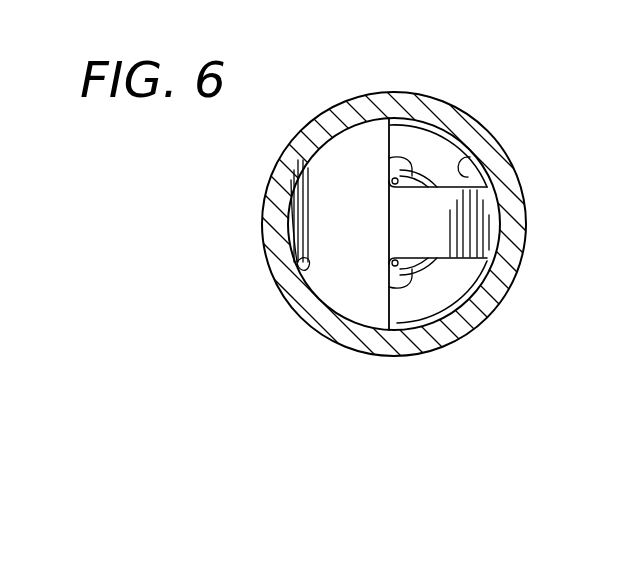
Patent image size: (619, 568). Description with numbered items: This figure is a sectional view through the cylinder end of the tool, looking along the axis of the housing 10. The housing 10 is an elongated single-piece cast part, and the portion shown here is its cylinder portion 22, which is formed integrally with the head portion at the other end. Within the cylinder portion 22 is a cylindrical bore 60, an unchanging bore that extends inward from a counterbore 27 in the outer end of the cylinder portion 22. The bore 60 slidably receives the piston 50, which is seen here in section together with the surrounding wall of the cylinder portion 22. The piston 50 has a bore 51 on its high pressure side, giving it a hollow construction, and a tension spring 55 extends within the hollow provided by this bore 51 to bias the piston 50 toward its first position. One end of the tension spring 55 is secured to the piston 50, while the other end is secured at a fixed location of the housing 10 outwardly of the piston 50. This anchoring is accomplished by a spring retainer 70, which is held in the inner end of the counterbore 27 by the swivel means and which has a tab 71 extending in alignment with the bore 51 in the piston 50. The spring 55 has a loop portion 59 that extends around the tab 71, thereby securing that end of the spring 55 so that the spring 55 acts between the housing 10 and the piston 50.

The housing 10 is at (450, 83).
The cylinder portion 22 is at (481, 123).
The counterbore 27 is at (302, 266).
The piston 50 is at (457, 278).
The bore 51 is at (390, 288).
The tension spring 55 is at (388, 160).
The loop portion 59 is at (392, 260).
The cylindrical bore 60 is at (473, 172).
The spring retainer 70 is at (267, 192).
The tab 71 is at (492, 222).